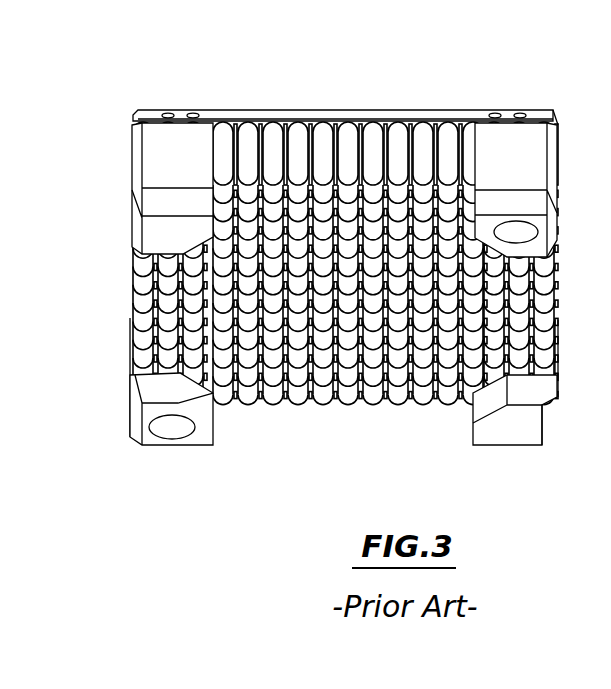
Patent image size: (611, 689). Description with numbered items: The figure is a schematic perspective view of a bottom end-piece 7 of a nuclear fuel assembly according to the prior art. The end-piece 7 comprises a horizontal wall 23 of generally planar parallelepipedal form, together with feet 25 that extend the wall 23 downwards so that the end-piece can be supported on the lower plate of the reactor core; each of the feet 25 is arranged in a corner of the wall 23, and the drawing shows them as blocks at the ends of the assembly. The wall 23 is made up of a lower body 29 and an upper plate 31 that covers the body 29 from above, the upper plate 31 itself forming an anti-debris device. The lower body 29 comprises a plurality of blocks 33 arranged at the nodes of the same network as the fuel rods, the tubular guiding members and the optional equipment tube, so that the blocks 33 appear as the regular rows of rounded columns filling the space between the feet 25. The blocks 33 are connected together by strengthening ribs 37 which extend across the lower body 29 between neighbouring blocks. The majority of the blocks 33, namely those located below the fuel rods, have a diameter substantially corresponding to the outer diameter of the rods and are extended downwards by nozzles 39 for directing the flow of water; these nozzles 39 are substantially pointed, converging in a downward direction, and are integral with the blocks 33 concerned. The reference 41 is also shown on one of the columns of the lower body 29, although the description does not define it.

The bottom end-piece 7 is at (499, 96).
The horizontal wall 23 is at (410, 104).
The feet 25 is at (160, 200).
The lower body 29 is at (314, 130).
The upper plate 31 is at (350, 243).
The blocks 33 is at (443, 153).
The strengthening ribs 37 is at (400, 140).
The nozzles 39 is at (243, 178).
The contact column 41 is at (358, 330).